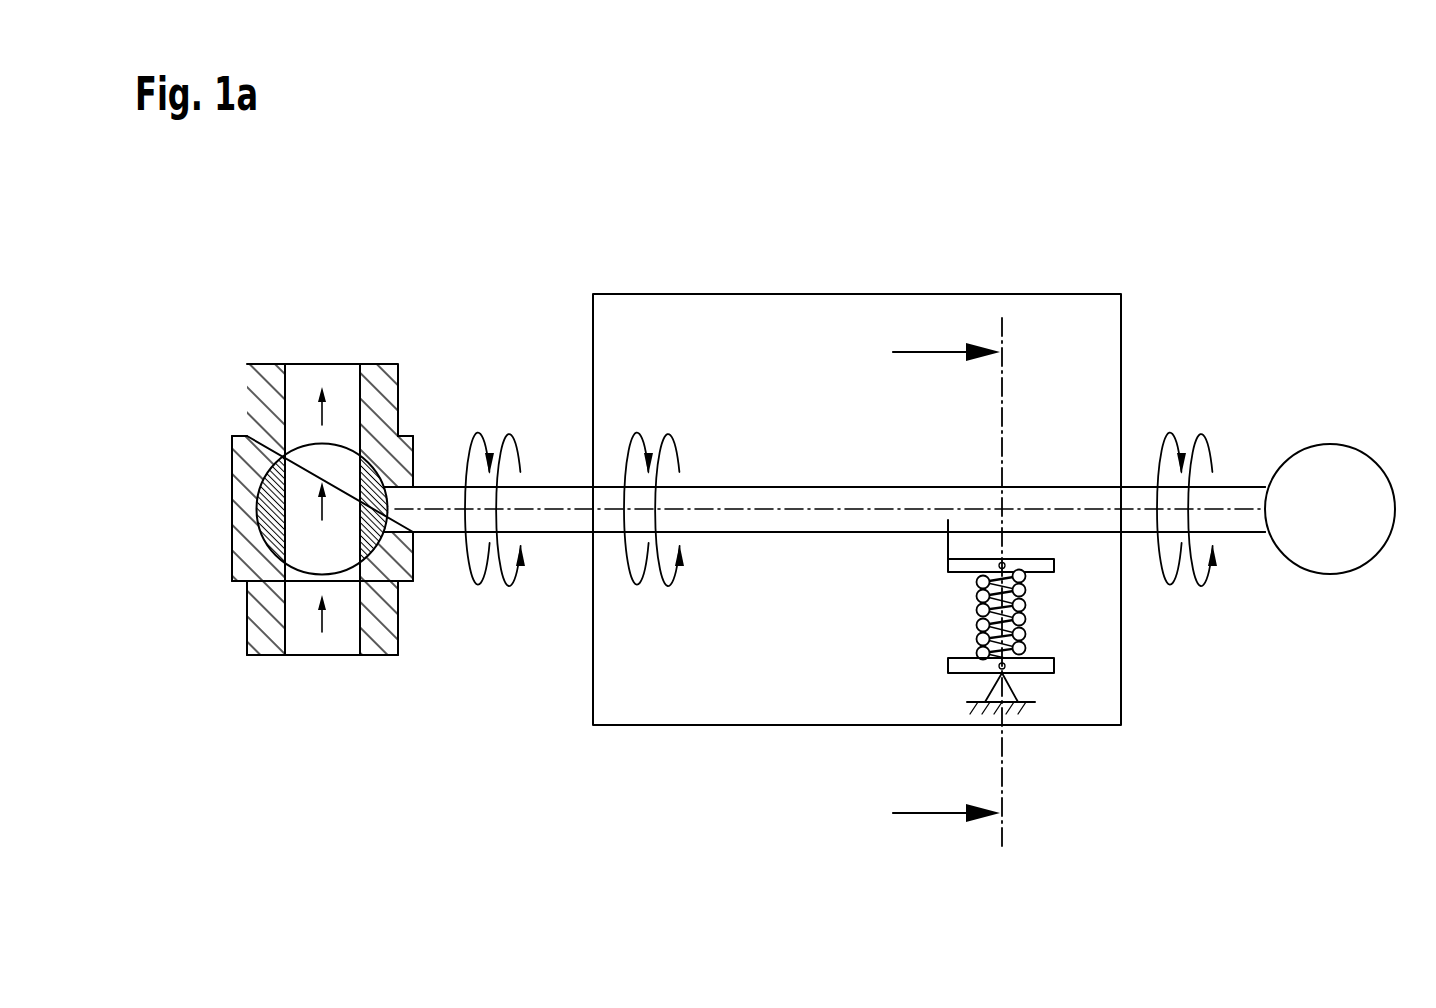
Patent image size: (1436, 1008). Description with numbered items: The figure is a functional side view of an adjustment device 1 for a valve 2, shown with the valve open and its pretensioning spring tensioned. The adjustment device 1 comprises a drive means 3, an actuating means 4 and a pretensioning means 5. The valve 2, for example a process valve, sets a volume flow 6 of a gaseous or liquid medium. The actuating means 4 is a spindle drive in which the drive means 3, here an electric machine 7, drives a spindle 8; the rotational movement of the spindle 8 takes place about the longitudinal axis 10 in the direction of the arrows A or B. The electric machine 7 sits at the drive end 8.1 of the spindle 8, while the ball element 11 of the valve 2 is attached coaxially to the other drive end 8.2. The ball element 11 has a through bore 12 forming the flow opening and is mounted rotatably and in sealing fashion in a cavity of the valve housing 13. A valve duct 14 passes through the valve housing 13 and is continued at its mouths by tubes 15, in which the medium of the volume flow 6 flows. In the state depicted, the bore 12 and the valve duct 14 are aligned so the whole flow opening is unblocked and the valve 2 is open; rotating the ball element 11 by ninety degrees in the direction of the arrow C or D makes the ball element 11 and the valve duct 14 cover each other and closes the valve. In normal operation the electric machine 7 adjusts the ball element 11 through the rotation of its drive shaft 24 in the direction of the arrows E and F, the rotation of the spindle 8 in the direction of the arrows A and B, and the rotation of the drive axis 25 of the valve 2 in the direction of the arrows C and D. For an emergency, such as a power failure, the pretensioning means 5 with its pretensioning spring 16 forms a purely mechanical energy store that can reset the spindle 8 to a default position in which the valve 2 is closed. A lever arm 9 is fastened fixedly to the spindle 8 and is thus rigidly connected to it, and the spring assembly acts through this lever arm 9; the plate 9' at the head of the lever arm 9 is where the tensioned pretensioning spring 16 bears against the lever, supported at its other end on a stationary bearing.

The adjustment device 1 is at (1280, 250).
The valve 2 is at (281, 518).
The drive means 3 is at (1348, 522).
The actuating means 4 is at (775, 475).
The pretensioning means 5 is at (984, 642).
The volume flow 6 is at (320, 622).
The electric machine 7 is at (1330, 574).
The spindle 8 is at (824, 462).
The drive end of the spindle 8.1 is at (1133, 500).
The drive end of the spindle 8.2 is at (553, 500).
The lever arm 9 is at (907, 555).
The plate 9' is at (960, 598).
The longitudinal axis 10 is at (819, 510).
The ball element 11 is at (278, 521).
The through bore 12 is at (337, 467).
The valve housing 13 is at (253, 460).
The valve duct 14 is at (295, 445).
The tubes 15 is at (255, 630).
The pretensioning spring 16 is at (1023, 620).
The drive shaft 24 is at (1230, 500).
The drive axis 25 is at (432, 500).
The direction of rotation of the spindle A is at (637, 586).
The direction of rotation of the spindle B is at (668, 586).
The direction of rotation of the ball element C is at (478, 586).
The direction of rotation of the ball element D is at (507, 586).
The direction of rotation of the drive shaft E is at (1201, 586).
The direction of rotation of the drive shaft F is at (1170, 586).